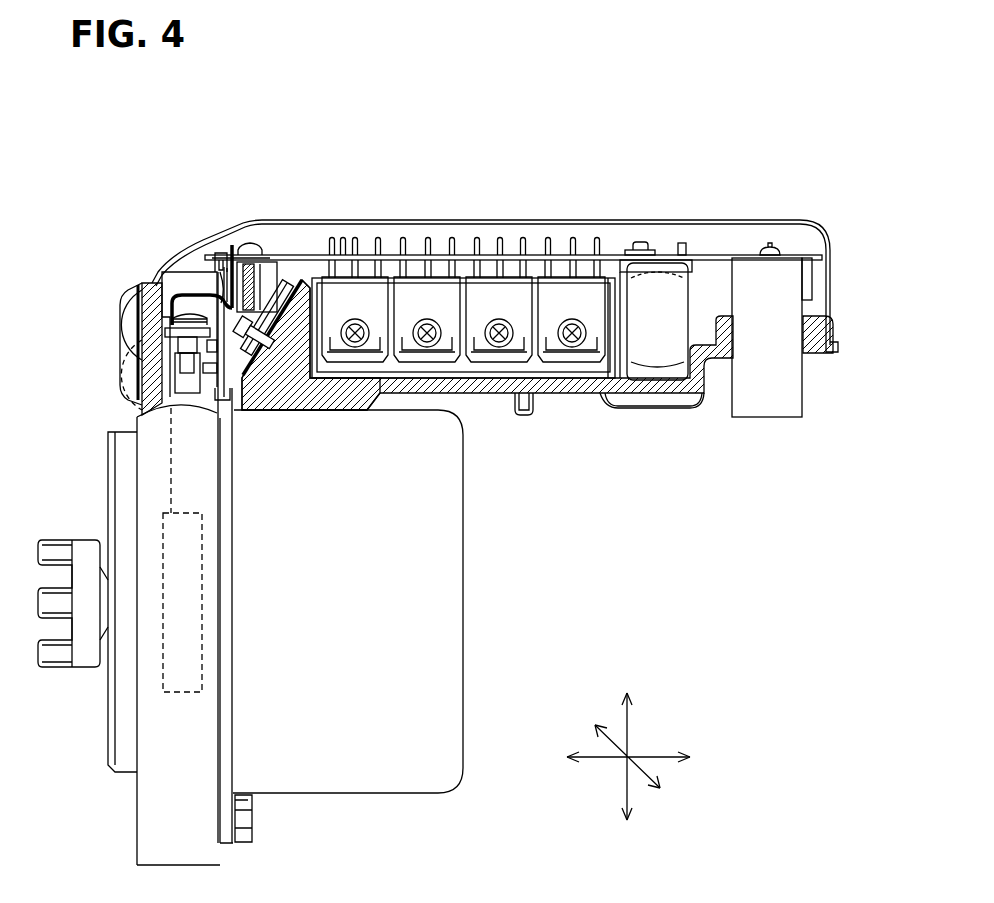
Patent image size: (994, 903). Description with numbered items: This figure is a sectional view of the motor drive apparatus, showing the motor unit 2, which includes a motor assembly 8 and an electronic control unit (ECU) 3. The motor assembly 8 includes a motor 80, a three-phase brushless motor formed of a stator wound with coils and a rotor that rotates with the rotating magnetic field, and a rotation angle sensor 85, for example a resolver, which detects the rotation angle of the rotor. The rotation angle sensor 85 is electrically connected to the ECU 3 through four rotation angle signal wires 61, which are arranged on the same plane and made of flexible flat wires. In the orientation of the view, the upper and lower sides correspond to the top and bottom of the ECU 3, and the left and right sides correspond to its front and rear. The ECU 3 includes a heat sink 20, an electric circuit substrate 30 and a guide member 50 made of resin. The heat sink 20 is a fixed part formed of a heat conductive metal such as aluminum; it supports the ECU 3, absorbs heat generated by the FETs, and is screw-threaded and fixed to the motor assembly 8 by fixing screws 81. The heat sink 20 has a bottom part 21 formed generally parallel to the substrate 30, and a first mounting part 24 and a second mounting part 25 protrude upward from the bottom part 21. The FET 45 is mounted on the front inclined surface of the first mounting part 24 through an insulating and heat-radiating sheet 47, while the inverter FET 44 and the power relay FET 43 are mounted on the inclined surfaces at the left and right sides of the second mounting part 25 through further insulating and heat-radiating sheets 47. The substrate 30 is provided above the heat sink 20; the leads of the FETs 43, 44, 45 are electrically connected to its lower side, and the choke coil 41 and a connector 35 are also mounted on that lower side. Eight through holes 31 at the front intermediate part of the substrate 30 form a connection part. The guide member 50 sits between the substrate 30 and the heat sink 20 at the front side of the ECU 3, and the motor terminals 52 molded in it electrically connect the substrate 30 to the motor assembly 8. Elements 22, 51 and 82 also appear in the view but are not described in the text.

The motor unit 2 is at (600, 540).
The electronic control unit (ECU) 3 is at (836, 320).
The motor assembly 8 is at (470, 610).
The heat sink 20 is at (818, 353).
The bottom part 21 is at (650, 370).
The cover 22 is at (800, 222).
The first mounting part 24 is at (305, 279).
The second mounting part 25 is at (390, 286).
The electric circuit substrate 30 is at (704, 255).
The through hole 31 is at (245, 243).
The connector 35 is at (787, 403).
The choke coil 41 is at (668, 367).
The power relay FET 43 is at (560, 288).
The inverter FET 44 is at (343, 288).
The FET 45 is at (283, 273).
The insulating and heat-radiating sheet 47 is at (603, 352).
The guide member 50 is at (270, 350).
The terminal 51 is at (268, 262).
The motor terminal 52 is at (212, 293).
The rotation angle signal wire 61 is at (172, 300).
The motor 80 is at (400, 790).
The fixing screw 81 is at (130, 327).
The fixing bolt 82 is at (247, 243).
The rotation angle sensor 85 is at (163, 530).